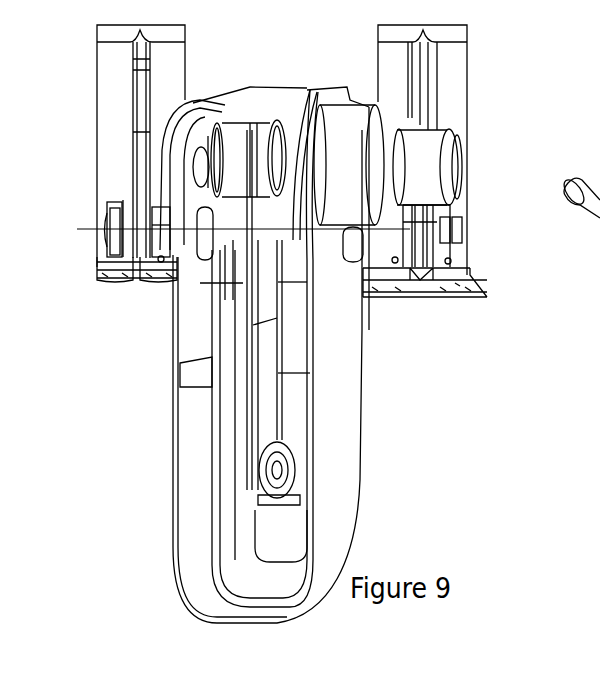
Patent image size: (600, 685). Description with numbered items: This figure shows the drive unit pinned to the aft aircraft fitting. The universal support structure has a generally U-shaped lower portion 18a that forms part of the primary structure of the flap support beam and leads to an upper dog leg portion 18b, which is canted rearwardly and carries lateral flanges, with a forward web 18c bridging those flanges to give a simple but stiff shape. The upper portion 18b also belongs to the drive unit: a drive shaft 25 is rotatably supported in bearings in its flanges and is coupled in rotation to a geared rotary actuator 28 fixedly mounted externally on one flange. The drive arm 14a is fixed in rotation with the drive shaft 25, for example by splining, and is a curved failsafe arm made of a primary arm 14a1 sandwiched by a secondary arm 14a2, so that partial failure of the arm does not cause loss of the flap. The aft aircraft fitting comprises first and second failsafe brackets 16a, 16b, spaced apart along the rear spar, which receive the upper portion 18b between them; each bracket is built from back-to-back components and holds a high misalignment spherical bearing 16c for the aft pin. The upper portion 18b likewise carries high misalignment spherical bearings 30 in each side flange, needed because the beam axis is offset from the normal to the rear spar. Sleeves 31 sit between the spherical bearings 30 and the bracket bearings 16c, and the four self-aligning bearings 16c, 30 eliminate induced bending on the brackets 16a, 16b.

The drive arm 14a is at (242, 360).
The primary arm 14a1 is at (243, 283).
The secondary arm 14a2 is at (223, 245).
The first failsafe bracket 16a is at (450, 95).
The second failsafe bracket 16b is at (112, 85).
The high misalignment spherical bearing 16c is at (130, 235).
The lower U-shaped portion 18a is at (347, 500).
The upper dog leg portion 18b is at (195, 115).
The forward web 18c is at (290, 358).
The drive shaft 25 is at (278, 133).
The geared rotary actuator 28 is at (423, 170).
The high misalignment spherical bearing 30 is at (292, 237).
The sleeve 31 is at (168, 238).